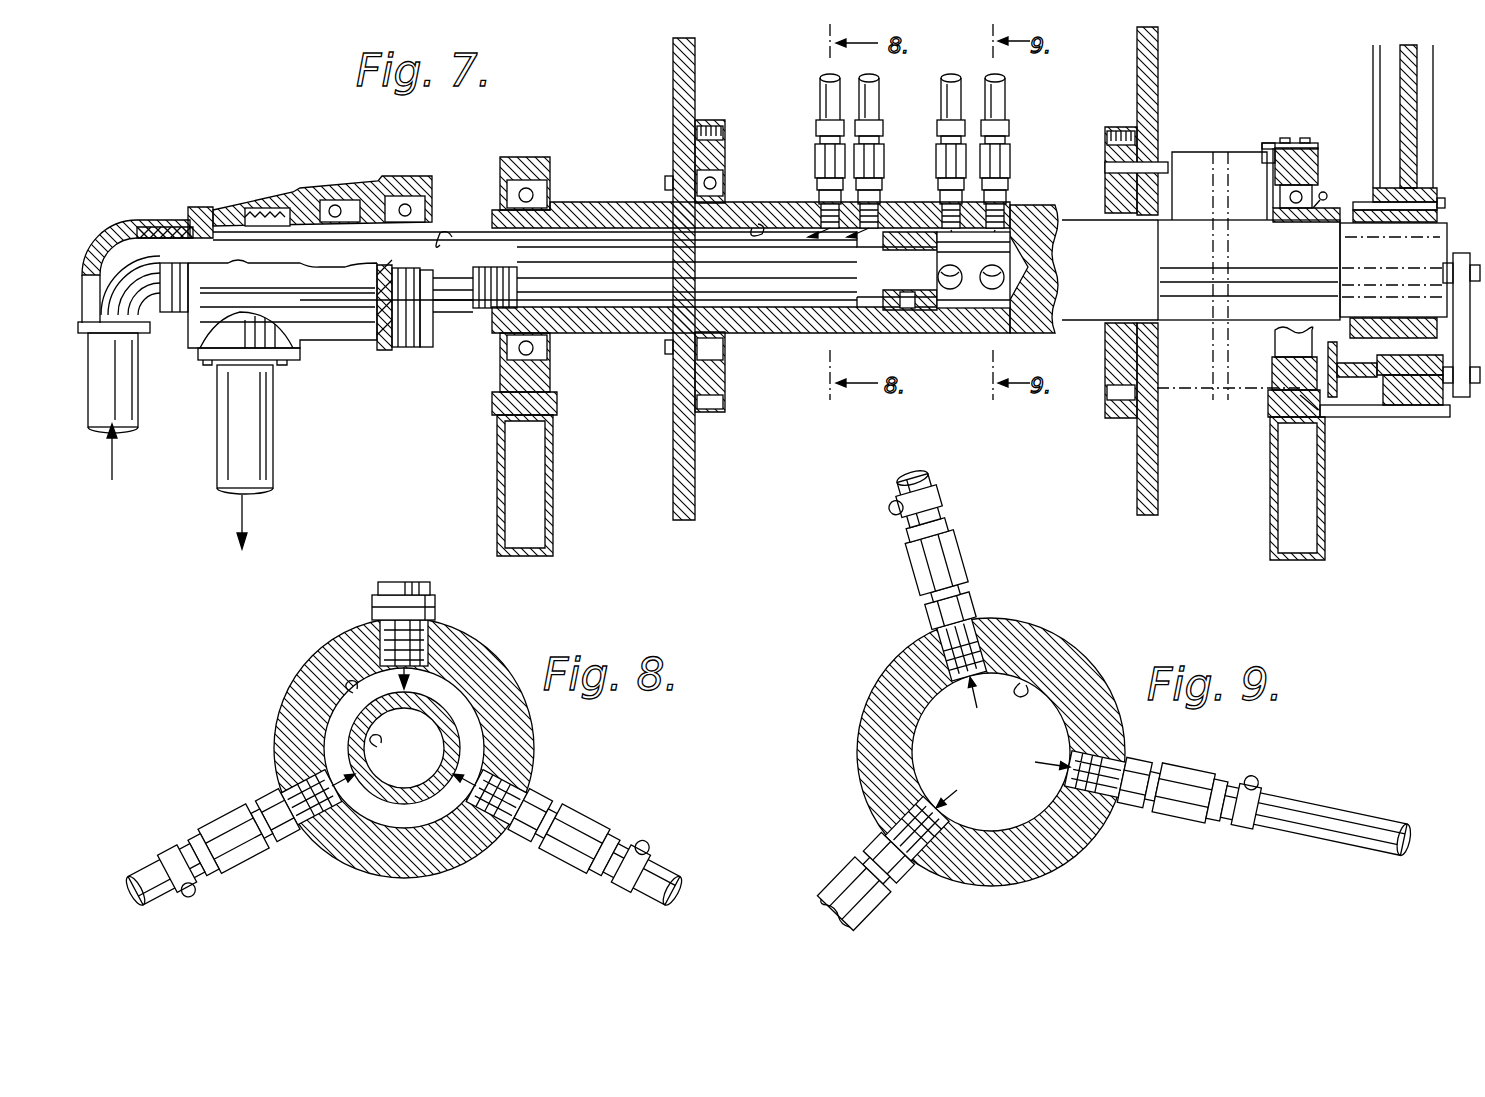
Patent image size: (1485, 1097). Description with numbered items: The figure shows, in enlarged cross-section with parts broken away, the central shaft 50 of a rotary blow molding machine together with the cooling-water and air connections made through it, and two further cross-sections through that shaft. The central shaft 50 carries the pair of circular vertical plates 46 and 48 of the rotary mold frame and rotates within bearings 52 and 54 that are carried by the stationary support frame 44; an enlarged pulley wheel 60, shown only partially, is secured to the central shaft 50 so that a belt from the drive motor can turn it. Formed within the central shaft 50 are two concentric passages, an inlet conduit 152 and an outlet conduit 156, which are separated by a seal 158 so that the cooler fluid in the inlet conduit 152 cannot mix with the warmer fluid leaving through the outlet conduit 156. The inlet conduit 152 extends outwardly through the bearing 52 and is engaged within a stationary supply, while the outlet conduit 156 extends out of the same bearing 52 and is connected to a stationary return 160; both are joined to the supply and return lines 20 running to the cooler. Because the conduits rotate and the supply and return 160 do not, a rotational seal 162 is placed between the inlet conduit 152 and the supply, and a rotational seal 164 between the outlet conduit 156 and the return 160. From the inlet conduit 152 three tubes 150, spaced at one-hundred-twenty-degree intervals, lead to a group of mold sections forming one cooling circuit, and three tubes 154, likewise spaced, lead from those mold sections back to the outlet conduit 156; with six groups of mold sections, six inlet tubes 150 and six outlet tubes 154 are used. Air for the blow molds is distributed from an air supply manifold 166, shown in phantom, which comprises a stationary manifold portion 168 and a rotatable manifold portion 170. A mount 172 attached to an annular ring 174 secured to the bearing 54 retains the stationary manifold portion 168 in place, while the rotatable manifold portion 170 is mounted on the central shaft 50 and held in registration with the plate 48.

In FIG. 7, the supply and return lines 20 is at (223, 440).
In FIG. 7, the stationary support frame 44 is at (497, 452).
In FIG. 7, the circular vertical plate 46 is at (696, 452).
In FIG. 7, the circular vertical plate 48 is at (1135, 462).
In FIG. 7, the central shaft 50 is at (620, 205).
In FIG. 8, the central shaft 50 is at (473, 635).
In FIG. 9, the central shaft 50 is at (873, 697).
In FIG. 7, the bearing 52 is at (550, 182).
In FIG. 7, the bearing 54 is at (1318, 198).
In FIG. 7, the pulley wheel 60 is at (1413, 148).
In FIG. 7, the tube 150 is at (952, 105).
In FIG. 9, the tube 150 is at (880, 495).
In FIG. 7, the inlet conduit 152 is at (225, 240).
In FIG. 8, the inlet conduit 152 is at (377, 747).
In FIG. 7, the tube 154 is at (866, 106).
In FIG. 8, the tube 154 is at (380, 587).
In FIG. 7, the outlet conduit 156 is at (440, 245).
In FIG. 8, the outlet conduit 156 is at (353, 693).
In FIG. 9, the outlet conduit 156 is at (1020, 683).
In FIG. 7, the seal 158 is at (121, 222).
In FIG. 7, the return 160 is at (336, 327).
In FIG. 7, the rotational seal 162 is at (162, 242).
In FIG. 7, the rotational seal 164 is at (362, 197).
In FIG. 7, the air supply manifold 166 is at (1190, 150).
In FIG. 7, the stationary manifold portion 168 is at (1245, 372).
In FIG. 7, the rotatable manifold portion 170 is at (1182, 380).
In FIG. 7, the mount 172 is at (1275, 142).
In FIG. 7, the annular ring 174 is at (1320, 170).